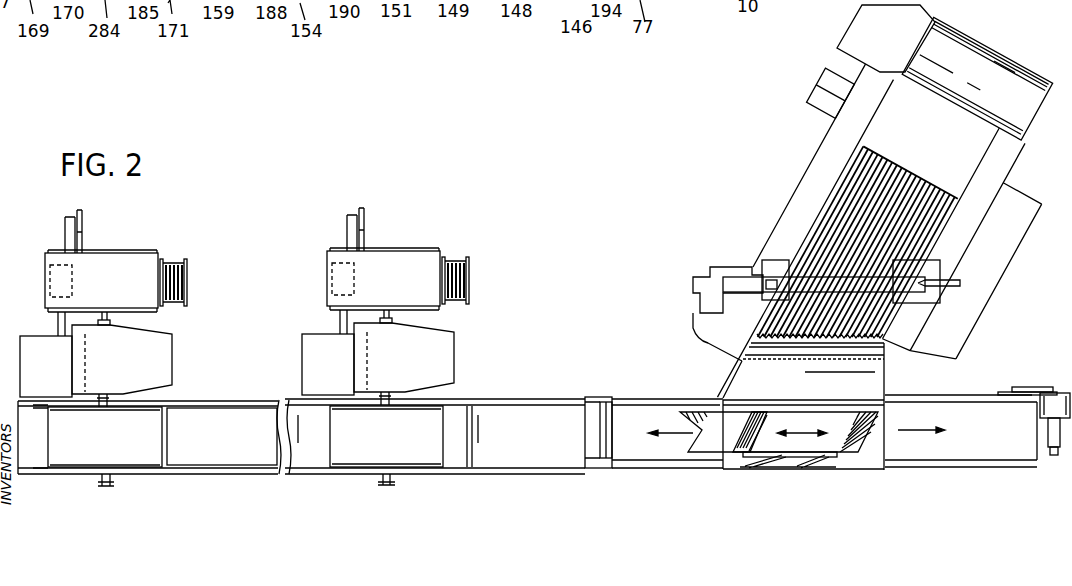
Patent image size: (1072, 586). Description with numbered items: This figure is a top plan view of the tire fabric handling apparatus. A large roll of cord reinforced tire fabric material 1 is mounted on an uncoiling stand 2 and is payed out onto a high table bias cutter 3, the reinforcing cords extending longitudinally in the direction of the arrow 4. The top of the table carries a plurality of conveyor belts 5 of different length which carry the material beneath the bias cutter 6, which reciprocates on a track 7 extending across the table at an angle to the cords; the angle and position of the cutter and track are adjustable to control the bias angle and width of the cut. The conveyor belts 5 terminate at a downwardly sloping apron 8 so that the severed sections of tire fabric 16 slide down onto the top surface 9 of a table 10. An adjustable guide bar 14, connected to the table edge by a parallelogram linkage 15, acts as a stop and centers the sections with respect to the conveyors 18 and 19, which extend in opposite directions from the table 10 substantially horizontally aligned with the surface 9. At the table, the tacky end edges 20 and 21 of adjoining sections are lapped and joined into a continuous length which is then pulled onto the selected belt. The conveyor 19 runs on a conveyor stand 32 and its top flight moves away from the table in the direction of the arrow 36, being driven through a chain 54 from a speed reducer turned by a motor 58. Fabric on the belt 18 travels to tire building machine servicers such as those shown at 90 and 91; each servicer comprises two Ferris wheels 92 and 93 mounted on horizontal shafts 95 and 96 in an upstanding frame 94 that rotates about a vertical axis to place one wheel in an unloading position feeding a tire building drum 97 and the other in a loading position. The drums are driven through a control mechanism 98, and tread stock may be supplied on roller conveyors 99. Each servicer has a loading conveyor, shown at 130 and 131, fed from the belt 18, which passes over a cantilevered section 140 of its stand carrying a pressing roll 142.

The roll of cord reinforced tire fabric material 1 is at (987, 60).
The uncoiling stand 2 is at (920, 17).
The high table bias cutter 3 is at (776, 190).
The arrow 4 is at (929, 150).
The conveyor belts 5 is at (933, 227).
The bias cutter 6 is at (780, 256).
The track 7 is at (897, 283).
The downwardly sloping apron 8 is at (877, 380).
The top surface 9 is at (875, 462).
The table 10 is at (806, 481).
The adjustable guide bar 14 is at (833, 463).
The parallelogram linkage 15 is at (790, 466).
The severed sections of tire fabric 16 is at (707, 445).
The conveyor 18 is at (666, 449).
The conveyor 19 is at (983, 452).
The end edge 20 is at (747, 423).
The end edge 21 is at (873, 425).
The conveyor stand 32 is at (949, 476).
The arrow 36 is at (912, 433).
The chain 54 is at (1032, 387).
The motor 58 is at (1057, 418).
The tire building machine servicer 90 is at (487, 341).
The tire building machine servicer 91 is at (204, 353).
The Ferris wheel 92 is at (154, 243).
The Ferris wheel 93 is at (141, 454).
The upstanding frame 94 is at (186, 334).
The shaft 95 is at (110, 315).
The shaft 96 is at (106, 407).
The tire building drum 97 is at (50, 275).
The control mechanism 98 is at (46, 350).
The roller conveyor 99 is at (185, 278).
The loading conveyor 130 is at (218, 484).
The loading conveyor 131 is at (519, 484).
The cantilevered section 140 is at (595, 395).
The pressing roll 142 is at (612, 418).